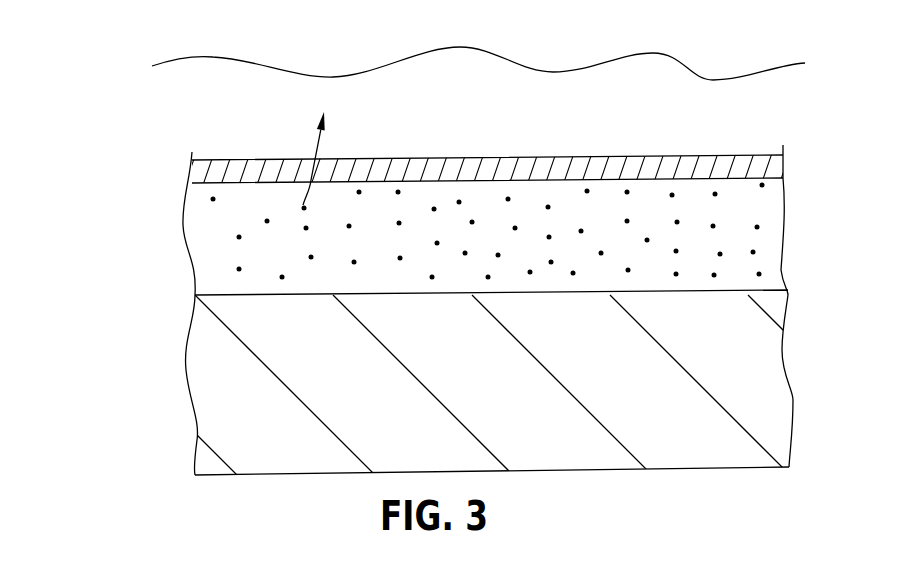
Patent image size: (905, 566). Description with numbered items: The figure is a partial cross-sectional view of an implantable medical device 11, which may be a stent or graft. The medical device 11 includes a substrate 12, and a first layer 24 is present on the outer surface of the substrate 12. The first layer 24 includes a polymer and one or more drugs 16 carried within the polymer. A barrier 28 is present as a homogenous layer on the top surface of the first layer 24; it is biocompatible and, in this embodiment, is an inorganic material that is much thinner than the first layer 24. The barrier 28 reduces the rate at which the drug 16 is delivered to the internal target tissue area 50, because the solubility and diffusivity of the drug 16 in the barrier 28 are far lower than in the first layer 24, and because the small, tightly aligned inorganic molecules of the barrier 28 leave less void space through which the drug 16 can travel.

The implantable medical device 11 is at (480, 288).
The substrate 12 is at (190, 415).
The drug 16 is at (236, 269).
The first layer 24 is at (459, 203).
The barrier 28 is at (192, 168).
The internal target tissue area 50 is at (172, 62).